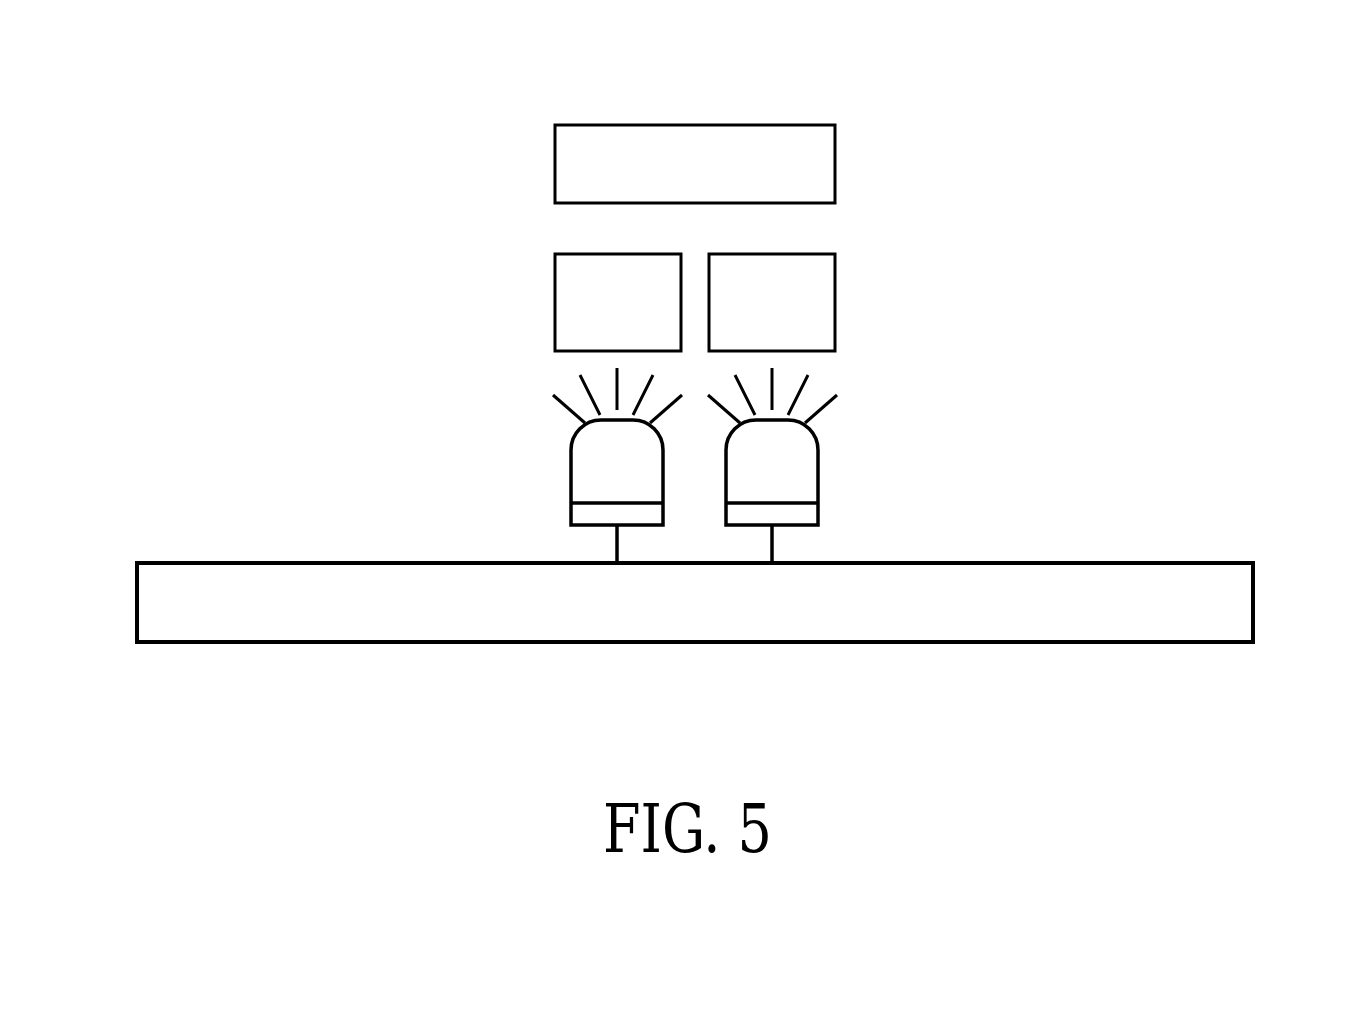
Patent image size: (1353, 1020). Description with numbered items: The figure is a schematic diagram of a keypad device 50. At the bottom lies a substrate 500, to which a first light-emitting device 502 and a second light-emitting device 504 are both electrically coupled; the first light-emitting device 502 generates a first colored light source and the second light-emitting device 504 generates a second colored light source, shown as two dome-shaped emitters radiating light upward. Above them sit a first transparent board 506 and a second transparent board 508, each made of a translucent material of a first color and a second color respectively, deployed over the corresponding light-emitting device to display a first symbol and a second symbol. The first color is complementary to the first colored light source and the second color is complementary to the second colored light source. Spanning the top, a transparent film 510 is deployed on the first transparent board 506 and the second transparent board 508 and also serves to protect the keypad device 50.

The keypad device 50 is at (1062, 102).
The substrate 500 is at (1208, 562).
The first light-emitting device 502 is at (592, 477).
The second light-emitting device 504 is at (798, 477).
The first transparent board 506 is at (573, 252).
The second transparent board 508 is at (815, 252).
The transparent film 510 is at (793, 123).